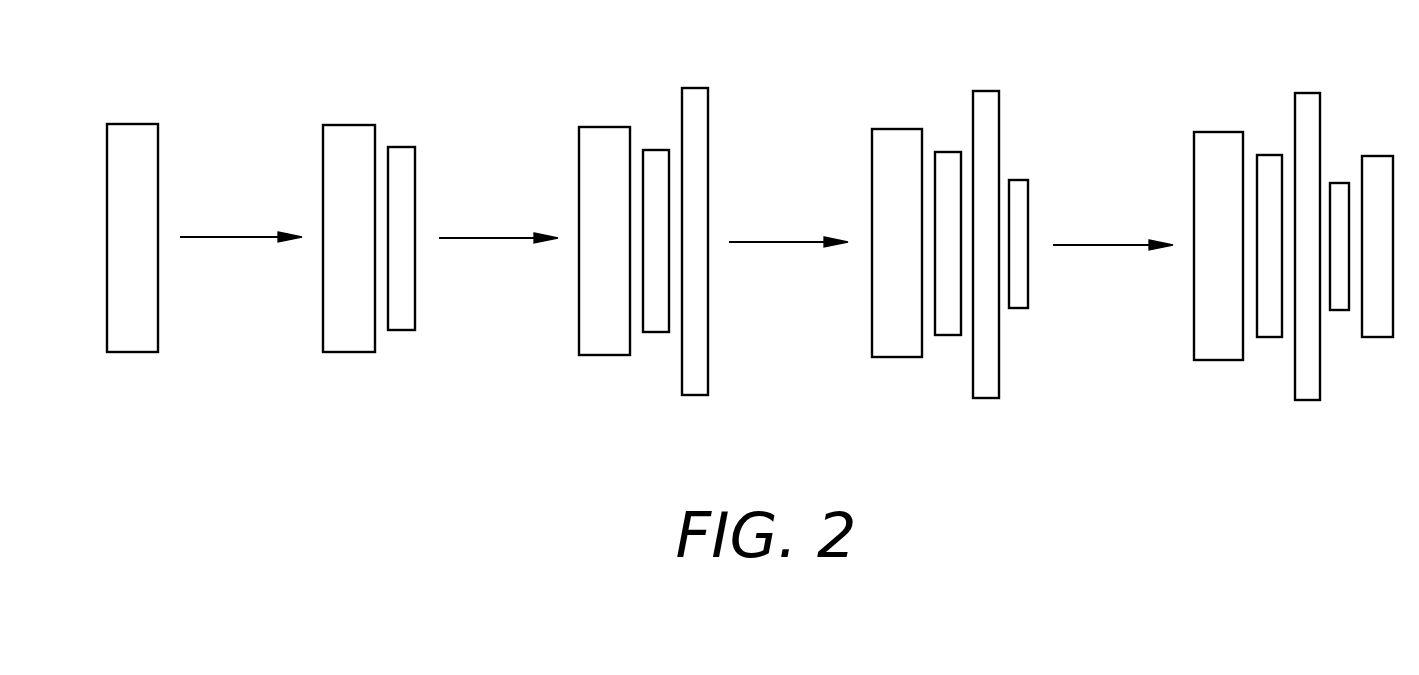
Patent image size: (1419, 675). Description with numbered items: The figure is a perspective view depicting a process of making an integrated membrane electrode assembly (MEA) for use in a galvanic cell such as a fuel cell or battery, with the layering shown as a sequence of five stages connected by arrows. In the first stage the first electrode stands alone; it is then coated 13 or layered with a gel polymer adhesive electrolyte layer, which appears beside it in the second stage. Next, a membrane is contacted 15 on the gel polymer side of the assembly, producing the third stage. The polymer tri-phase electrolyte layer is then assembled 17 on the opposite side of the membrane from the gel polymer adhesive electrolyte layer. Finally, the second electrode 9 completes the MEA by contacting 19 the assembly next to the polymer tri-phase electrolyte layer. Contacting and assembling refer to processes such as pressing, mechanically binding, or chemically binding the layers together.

The second electrode 9 is at (1376, 155).
The coating step 13 is at (241, 222).
The contacting step 15 is at (498, 223).
The assembling step 17 is at (788, 226).
The contacting step 19 is at (1113, 230).